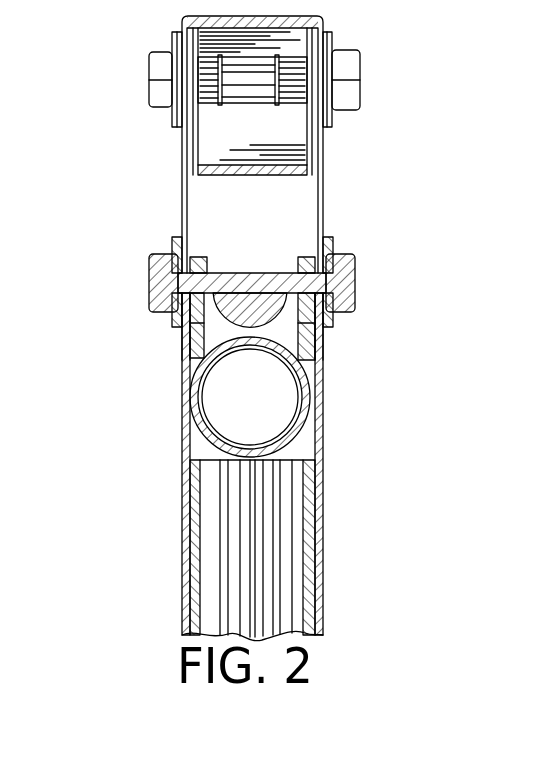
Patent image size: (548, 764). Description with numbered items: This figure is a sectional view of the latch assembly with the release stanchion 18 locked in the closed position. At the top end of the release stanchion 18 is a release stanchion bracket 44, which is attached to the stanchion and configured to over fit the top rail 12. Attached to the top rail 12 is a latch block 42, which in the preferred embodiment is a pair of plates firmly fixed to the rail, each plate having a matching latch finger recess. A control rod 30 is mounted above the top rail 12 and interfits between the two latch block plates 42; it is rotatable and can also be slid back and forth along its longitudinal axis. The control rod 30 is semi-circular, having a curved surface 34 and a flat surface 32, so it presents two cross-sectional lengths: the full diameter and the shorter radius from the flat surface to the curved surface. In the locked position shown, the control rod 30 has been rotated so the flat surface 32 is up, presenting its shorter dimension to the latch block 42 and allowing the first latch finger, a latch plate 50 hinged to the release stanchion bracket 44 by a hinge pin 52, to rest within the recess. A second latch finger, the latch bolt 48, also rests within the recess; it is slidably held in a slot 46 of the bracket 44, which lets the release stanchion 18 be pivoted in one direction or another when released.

The top rail 12 is at (318, 387).
The release stanchion 18 is at (287, 548).
The control rod 30 is at (318, 328).
The flat surface 32 is at (275, 273).
The curved surface 34 is at (205, 322).
The latch block 42 is at (195, 328).
The release stanchion bracket 44 is at (183, 415).
The slot 46 is at (182, 196).
The latch bolt 48 is at (150, 283).
The latch plate 50 is at (210, 137).
The hinge pin 52 is at (148, 83).